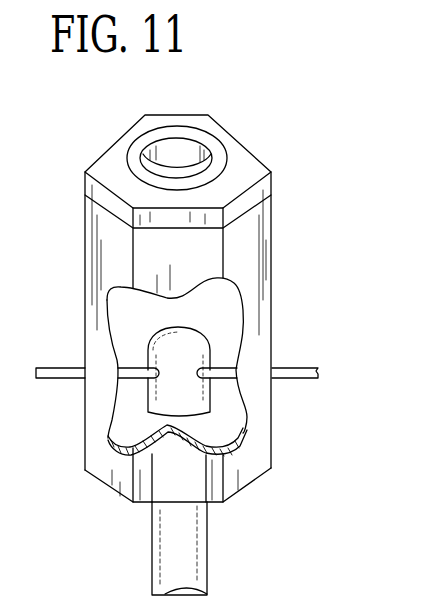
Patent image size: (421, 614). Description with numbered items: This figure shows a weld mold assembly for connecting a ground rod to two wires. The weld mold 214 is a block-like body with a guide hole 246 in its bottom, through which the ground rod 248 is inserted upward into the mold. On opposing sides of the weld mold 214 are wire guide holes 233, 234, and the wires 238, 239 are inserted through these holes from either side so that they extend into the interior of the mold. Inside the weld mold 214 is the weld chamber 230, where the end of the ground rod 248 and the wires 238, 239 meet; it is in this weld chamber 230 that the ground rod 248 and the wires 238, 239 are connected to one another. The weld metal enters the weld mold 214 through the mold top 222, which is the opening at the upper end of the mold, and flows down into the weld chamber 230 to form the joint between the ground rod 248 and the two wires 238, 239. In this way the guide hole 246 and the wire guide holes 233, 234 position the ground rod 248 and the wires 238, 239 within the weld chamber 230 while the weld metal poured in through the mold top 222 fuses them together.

The weld mold 214 is at (272, 243).
The mold top 222 is at (183, 115).
The weld chamber 230 is at (232, 420).
The wire guide hole 233 is at (85, 368).
The wire guide hole 234 is at (272, 366).
The wire 238 is at (292, 378).
The wire 239 is at (60, 378).
The guide hole 246 is at (208, 507).
The ground rod 248 is at (152, 545).